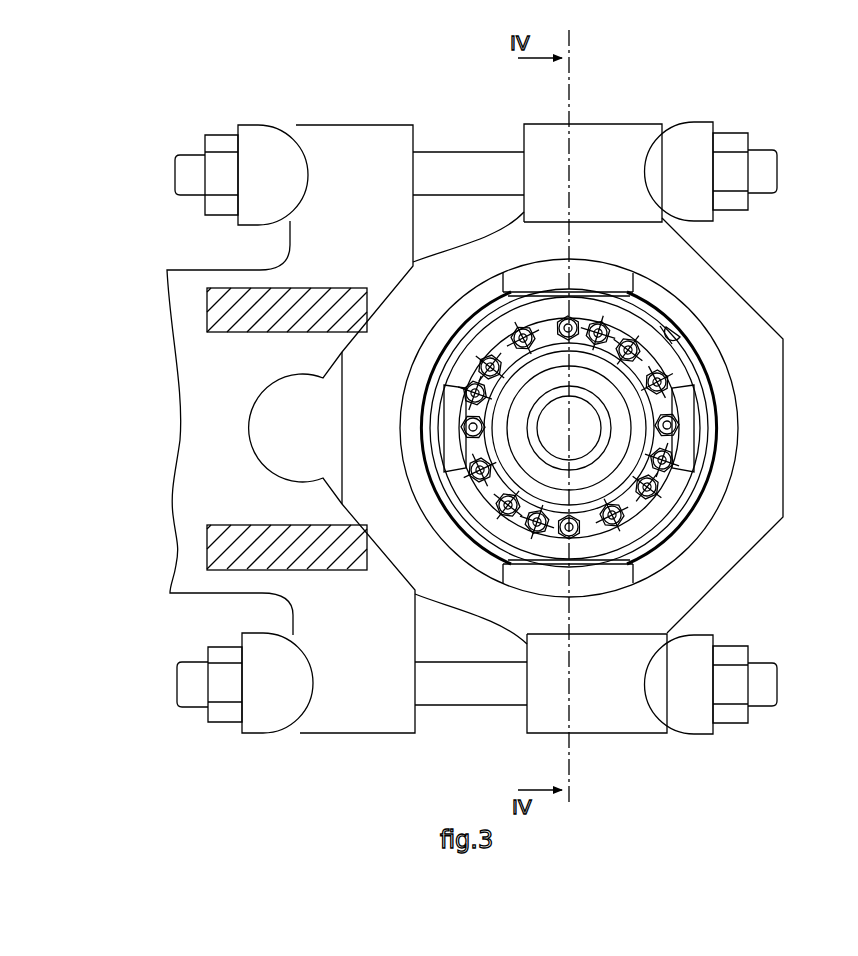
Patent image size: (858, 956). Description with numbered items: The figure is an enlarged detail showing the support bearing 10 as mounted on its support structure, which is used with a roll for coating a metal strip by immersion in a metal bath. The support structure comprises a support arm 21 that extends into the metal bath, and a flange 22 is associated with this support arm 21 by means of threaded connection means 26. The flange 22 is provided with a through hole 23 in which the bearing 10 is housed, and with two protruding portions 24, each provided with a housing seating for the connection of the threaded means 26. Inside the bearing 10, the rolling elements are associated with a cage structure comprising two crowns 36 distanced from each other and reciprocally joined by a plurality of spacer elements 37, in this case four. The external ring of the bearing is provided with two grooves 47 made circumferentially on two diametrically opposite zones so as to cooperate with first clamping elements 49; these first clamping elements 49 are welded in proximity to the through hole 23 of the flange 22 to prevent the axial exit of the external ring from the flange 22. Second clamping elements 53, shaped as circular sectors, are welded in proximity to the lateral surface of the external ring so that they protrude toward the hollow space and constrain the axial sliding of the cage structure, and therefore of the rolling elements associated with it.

The support bearing 10 is at (650, 524).
The support arm 21 is at (185, 469).
The flange 22 is at (767, 443).
The through hole 23 is at (697, 338).
The protruding portions 24 is at (618, 130).
The threaded connection means 26 is at (440, 160).
The crowns 36 is at (655, 362).
The spacer elements 37 is at (463, 388).
The grooves 47 is at (543, 290).
The first clamping elements 49 is at (597, 268).
The second clamping elements 53 is at (448, 452).